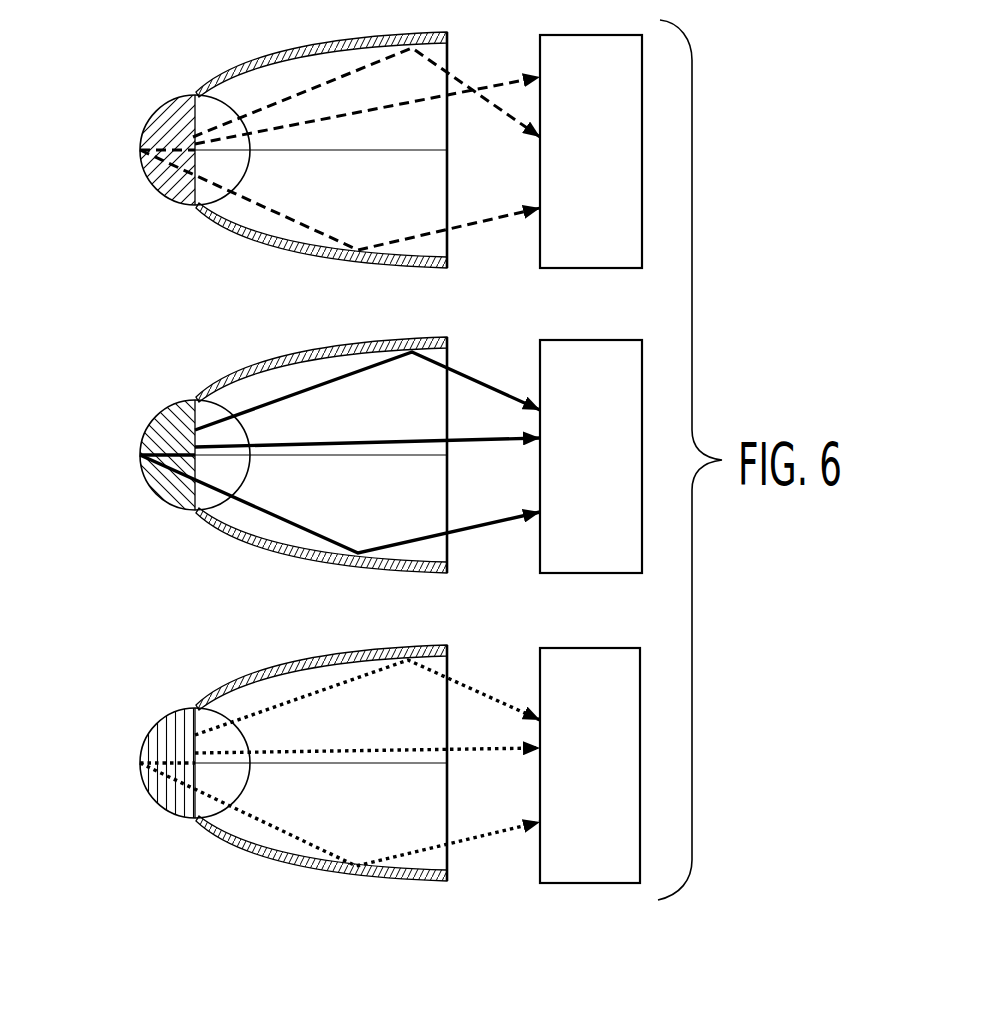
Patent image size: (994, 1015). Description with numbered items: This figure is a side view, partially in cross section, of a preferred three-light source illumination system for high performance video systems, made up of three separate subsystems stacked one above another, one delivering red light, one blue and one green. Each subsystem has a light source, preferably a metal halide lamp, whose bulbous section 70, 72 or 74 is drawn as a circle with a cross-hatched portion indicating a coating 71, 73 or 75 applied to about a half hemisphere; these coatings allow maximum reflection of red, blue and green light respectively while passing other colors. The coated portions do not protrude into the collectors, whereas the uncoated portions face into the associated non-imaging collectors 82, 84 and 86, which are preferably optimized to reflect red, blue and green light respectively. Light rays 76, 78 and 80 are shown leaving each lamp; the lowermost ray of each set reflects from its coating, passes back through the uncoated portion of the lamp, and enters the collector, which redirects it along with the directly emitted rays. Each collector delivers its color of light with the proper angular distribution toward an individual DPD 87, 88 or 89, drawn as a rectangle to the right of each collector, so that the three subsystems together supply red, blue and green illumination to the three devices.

The bulbous section 70 is at (252, 117).
The coating 71 is at (142, 146).
The non-imaging collector 82 is at (318, 41).
The light rays 76 is at (398, 53).
The DPD 87 is at (603, 172).
The bulbous section 72 is at (259, 419).
The coating 73 is at (142, 462).
The non-imaging collector 84 is at (305, 352).
The light rays 78 is at (393, 353).
The DPD 88 is at (603, 477).
The bulbous section 74 is at (258, 733).
The coating 75 is at (153, 783).
The non-imaging collector 86 is at (318, 656).
The light rays 80 is at (390, 667).
The DPD 89 is at (602, 787).